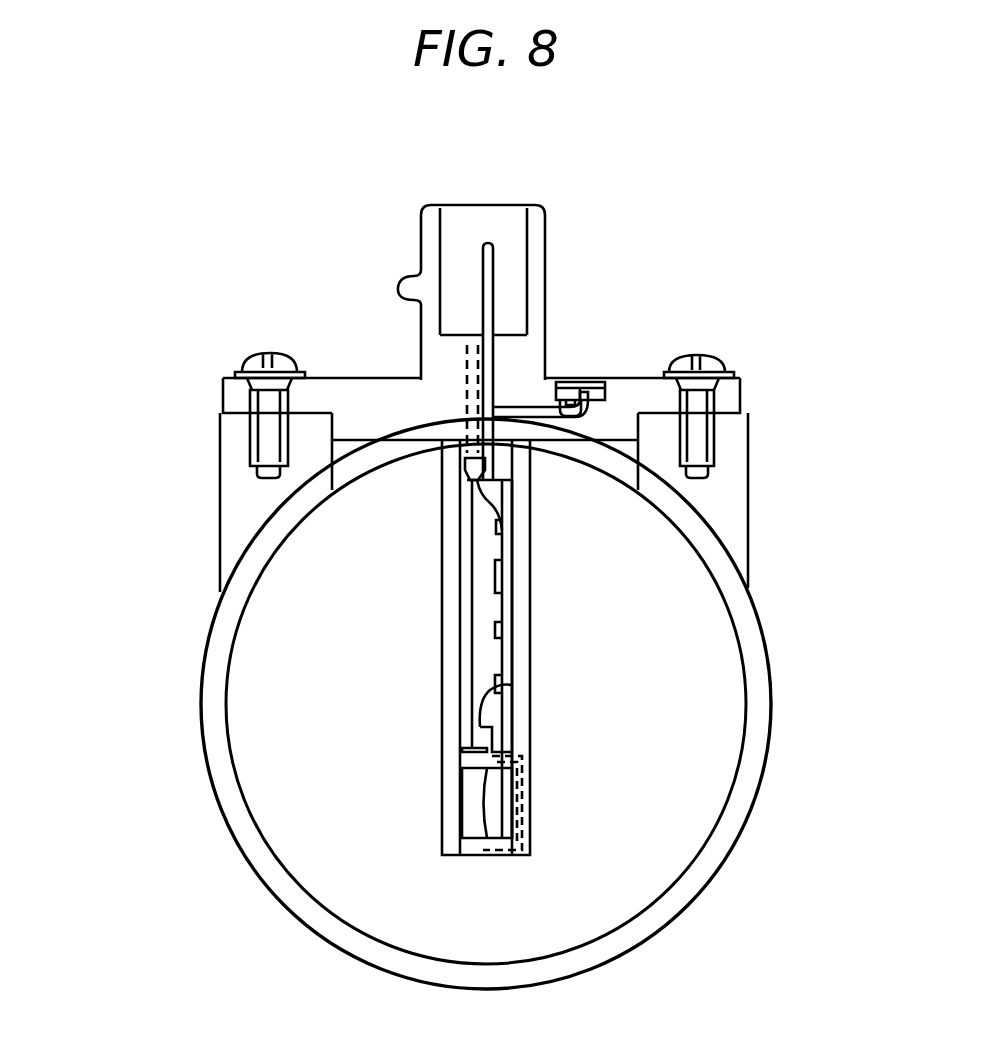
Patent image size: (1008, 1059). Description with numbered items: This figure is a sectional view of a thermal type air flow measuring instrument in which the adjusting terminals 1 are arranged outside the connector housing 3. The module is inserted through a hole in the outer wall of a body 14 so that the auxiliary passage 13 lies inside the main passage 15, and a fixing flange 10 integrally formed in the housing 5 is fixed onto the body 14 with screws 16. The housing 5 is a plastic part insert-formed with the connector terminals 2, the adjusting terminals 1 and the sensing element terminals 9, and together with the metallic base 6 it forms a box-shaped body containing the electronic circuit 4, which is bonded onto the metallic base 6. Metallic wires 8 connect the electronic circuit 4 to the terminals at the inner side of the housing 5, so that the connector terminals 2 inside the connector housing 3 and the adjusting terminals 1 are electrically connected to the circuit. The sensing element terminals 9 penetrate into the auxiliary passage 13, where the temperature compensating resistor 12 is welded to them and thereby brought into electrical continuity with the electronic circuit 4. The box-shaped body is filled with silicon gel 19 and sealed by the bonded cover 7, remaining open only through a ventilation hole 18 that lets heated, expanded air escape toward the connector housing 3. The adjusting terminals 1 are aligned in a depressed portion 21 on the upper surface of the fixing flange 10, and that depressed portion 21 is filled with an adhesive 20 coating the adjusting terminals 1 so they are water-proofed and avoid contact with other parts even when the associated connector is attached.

The adjusting terminals 1 is at (580, 385).
The connector terminals 2 is at (490, 242).
The connector housing 3 is at (547, 245).
The electronic circuit 4 is at (474, 648).
The housing 5 is at (498, 465).
The metallic base 6 is at (520, 642).
The cover 7 is at (444, 593).
The metallic wires 8 is at (480, 500).
The sensing element terminals 9 is at (480, 750).
The fixing flange 10 is at (230, 397).
The temperature compensating resistor 12 is at (482, 810).
The auxiliary passage 13 is at (503, 803).
The body 14 is at (222, 513).
The main passage 15 is at (722, 747).
The screws 16 is at (262, 358).
The ventilation hole 18 is at (460, 430).
The silicon gel 19 is at (483, 615).
The adhesive 20 is at (600, 385).
The depressed portion 21 is at (615, 383).